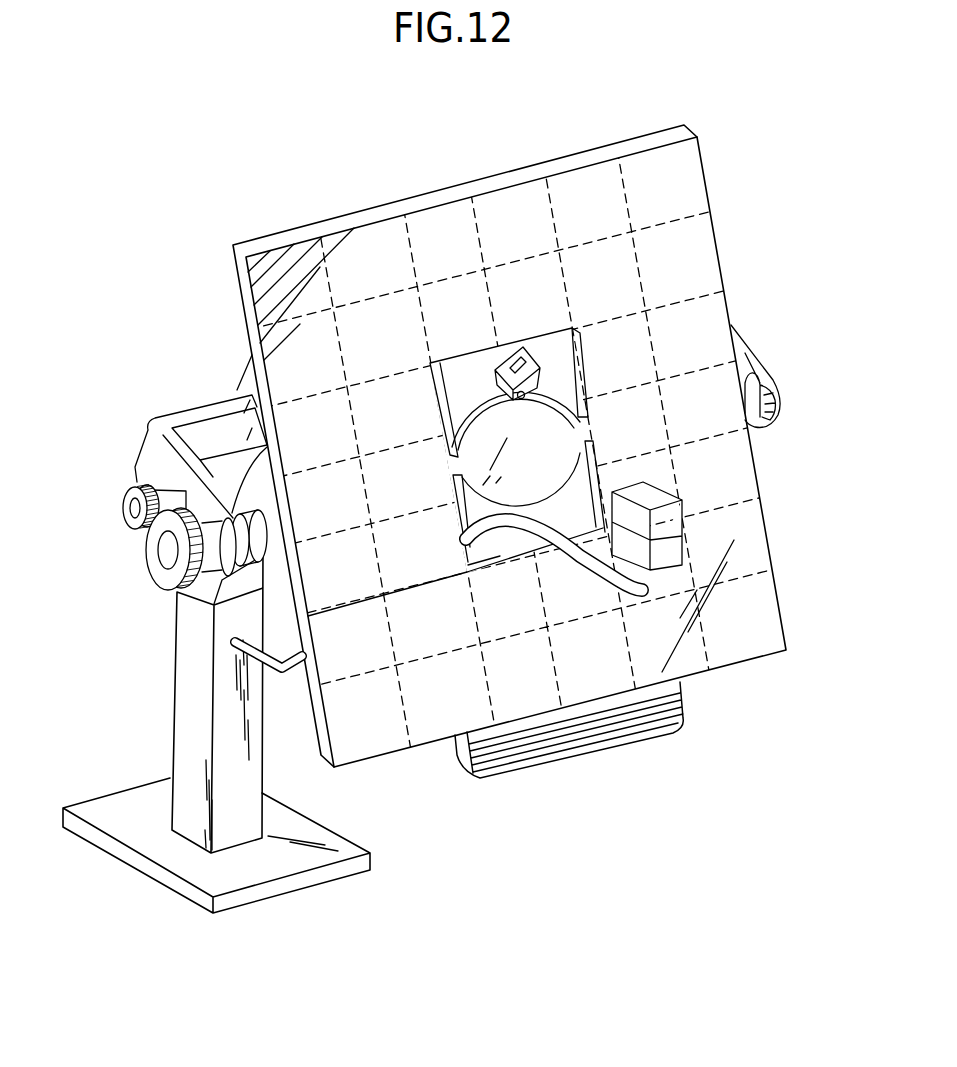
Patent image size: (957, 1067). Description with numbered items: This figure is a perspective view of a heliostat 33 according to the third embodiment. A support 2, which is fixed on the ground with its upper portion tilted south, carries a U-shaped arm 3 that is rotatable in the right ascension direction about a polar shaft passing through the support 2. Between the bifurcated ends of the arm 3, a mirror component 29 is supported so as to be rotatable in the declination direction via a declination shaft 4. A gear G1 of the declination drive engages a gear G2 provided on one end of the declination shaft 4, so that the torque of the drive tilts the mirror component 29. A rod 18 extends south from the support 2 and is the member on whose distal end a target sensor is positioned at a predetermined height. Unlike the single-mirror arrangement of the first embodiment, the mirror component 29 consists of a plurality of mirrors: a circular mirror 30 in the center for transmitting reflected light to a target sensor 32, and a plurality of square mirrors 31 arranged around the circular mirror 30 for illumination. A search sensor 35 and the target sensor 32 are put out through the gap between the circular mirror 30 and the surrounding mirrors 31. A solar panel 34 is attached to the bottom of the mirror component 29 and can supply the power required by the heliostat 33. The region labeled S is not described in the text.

The support 2 is at (177, 698).
The arm 3 is at (192, 412).
The declination shaft 4 is at (762, 398).
The rod 18 is at (276, 680).
The mirror component 29 is at (762, 665).
The circular mirror 30 is at (547, 476).
The square mirrors 31 is at (700, 250).
The target sensor 32 is at (664, 522).
The heliostat 33 is at (209, 265).
The solar panel 34 is at (538, 772).
The search sensor 35 is at (524, 362).
The gear G1 is at (128, 505).
The gear G2 is at (150, 560).
The sample space S is at (452, 368).